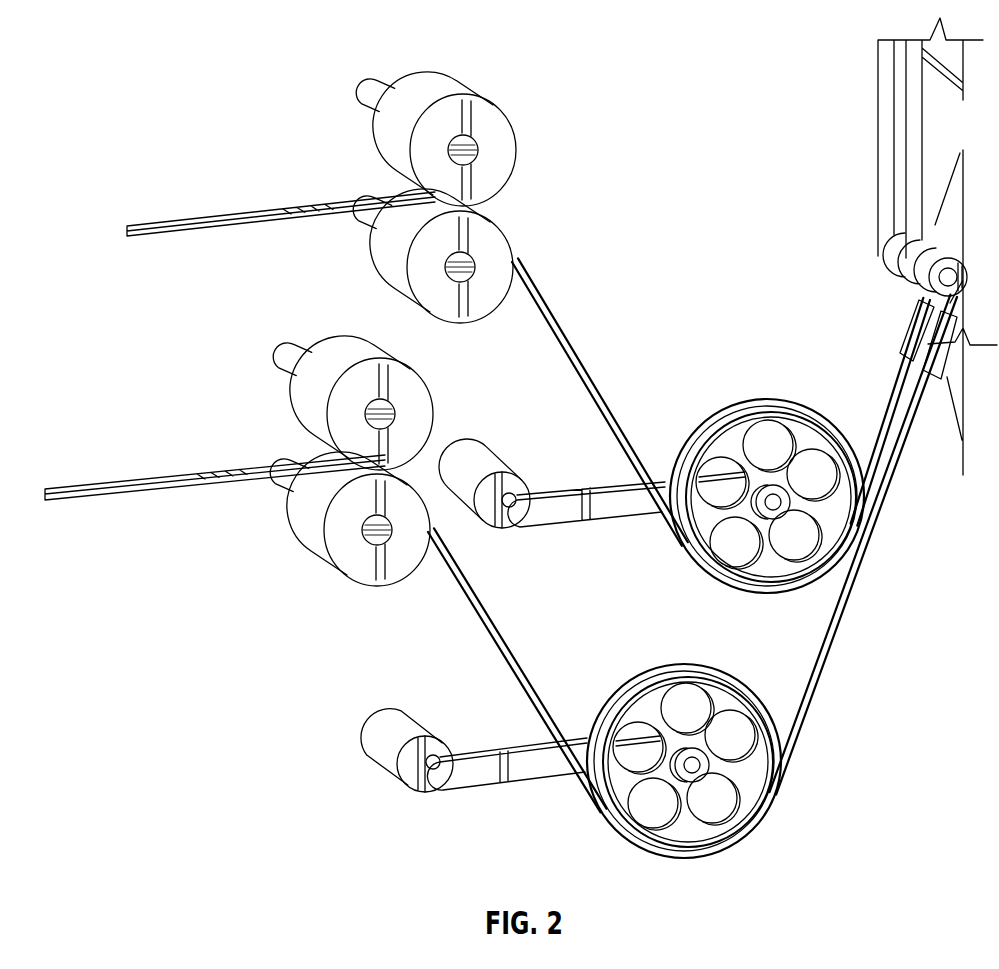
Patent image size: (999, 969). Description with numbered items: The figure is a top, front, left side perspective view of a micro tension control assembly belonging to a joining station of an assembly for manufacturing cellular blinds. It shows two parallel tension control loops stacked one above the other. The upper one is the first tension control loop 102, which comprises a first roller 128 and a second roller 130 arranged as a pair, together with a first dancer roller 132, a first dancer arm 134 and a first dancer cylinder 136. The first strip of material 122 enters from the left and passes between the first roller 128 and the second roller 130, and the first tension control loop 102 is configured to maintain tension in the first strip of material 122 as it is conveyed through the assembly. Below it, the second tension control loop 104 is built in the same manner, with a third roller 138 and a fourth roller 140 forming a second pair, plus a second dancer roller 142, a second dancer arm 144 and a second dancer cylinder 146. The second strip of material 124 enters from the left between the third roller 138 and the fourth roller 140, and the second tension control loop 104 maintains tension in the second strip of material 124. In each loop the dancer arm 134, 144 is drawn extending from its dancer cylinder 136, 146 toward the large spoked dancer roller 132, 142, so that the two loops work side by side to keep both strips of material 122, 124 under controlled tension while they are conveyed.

The first tension control loop 102 is at (680, 163).
The second tension control loop 104 is at (266, 692).
The first strip of material 122 is at (181, 221).
The second strip of material 124 is at (181, 476).
The first roller 128 is at (505, 112).
The second roller 130 is at (508, 232).
The first dancer roller 132 is at (765, 398).
The first dancer arm 134 is at (596, 519).
The first dancer cylinder 136 is at (505, 464).
The third roller 138 is at (316, 346).
The fourth roller 140 is at (304, 545).
The second dancer roller 142 is at (770, 808).
The second dancer arm 144 is at (521, 779).
The second dancer cylinder 146 is at (384, 772).